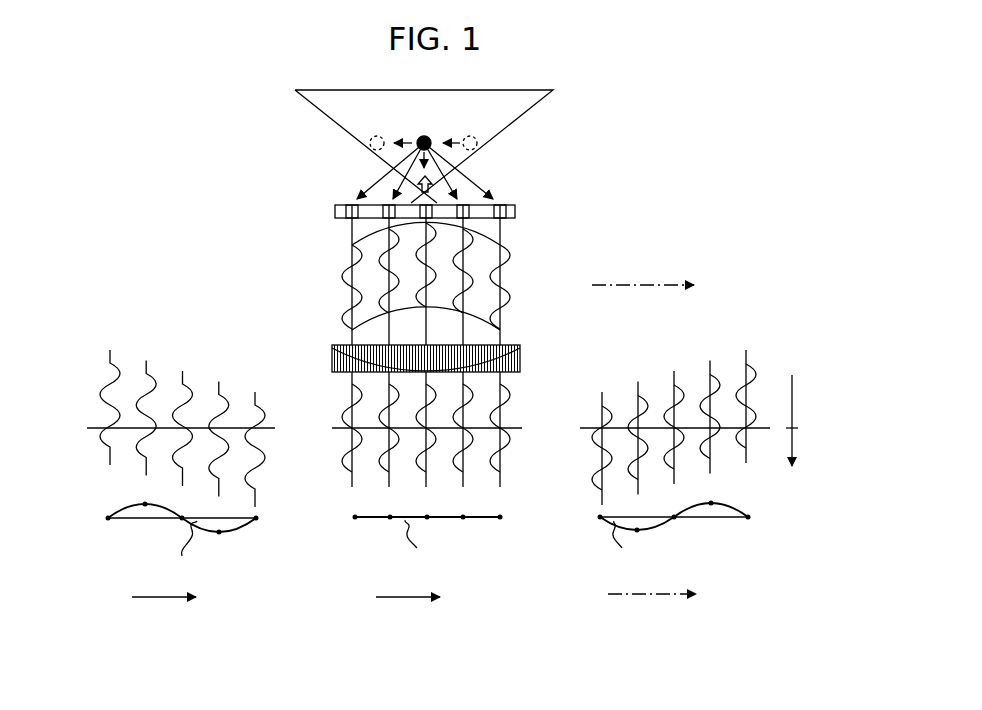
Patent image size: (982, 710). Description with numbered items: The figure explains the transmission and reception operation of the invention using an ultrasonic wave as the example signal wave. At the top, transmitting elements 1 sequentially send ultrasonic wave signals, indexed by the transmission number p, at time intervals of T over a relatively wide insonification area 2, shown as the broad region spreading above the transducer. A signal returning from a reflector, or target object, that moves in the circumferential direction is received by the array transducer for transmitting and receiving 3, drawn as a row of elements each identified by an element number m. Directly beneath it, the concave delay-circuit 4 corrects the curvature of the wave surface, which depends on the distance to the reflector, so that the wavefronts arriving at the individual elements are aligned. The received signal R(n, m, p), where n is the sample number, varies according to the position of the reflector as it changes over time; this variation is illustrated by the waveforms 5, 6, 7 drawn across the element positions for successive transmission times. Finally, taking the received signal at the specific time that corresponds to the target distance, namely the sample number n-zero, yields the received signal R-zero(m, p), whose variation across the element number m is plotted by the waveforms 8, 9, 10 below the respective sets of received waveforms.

The transmitting elements 1 is at (439, 205).
The insonification area 2 is at (350, 136).
The array transducer for transmitting and receiving 3 is at (335, 212).
The concave delay-circuit 4 is at (332, 355).
The waveform 5 is at (689, 376).
The waveform 6 is at (416, 429).
The waveform 7 is at (164, 405).
The waveform 8 is at (663, 581).
The waveform 9 is at (414, 581).
The waveform 10 is at (166, 581).